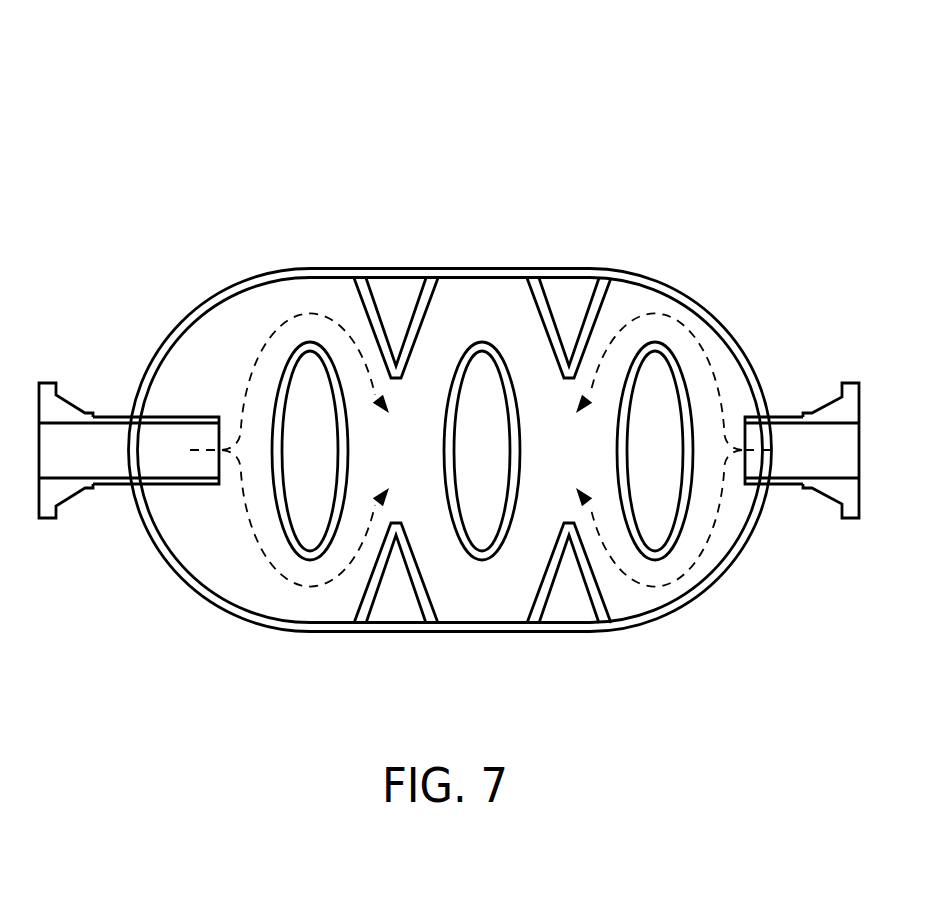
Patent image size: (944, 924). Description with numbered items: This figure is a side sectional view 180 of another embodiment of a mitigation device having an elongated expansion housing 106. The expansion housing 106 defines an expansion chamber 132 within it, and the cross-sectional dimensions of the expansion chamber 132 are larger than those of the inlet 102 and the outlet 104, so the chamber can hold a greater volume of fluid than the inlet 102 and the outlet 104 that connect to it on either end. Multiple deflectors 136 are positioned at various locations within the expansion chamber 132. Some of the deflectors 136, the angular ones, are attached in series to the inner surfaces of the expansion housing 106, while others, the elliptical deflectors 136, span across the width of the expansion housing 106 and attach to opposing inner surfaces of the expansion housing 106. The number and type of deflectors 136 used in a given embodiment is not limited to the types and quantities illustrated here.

The side sectional view 180 is at (266, 124).
The expansion housing 106 is at (202, 302).
The expansion chamber 132 is at (209, 358).
The outlet 104 is at (115, 416).
The inlet 102 is at (790, 415).
The deflectors 136 is at (680, 533).